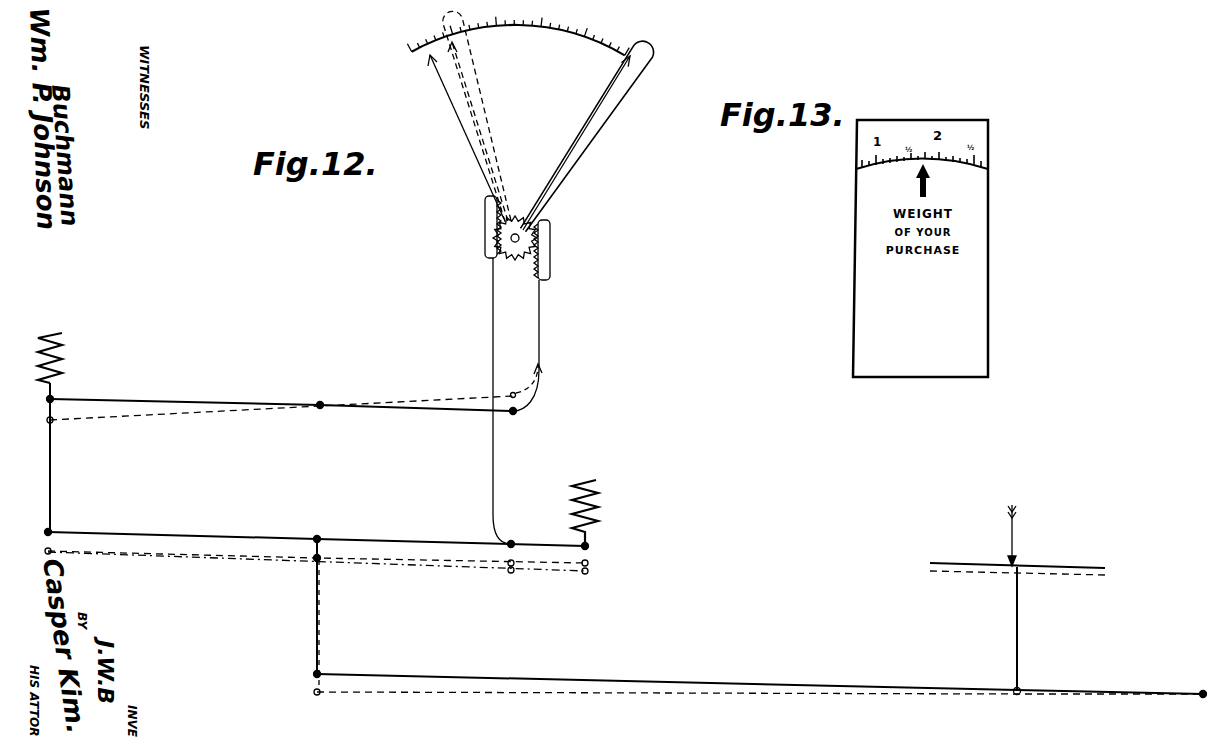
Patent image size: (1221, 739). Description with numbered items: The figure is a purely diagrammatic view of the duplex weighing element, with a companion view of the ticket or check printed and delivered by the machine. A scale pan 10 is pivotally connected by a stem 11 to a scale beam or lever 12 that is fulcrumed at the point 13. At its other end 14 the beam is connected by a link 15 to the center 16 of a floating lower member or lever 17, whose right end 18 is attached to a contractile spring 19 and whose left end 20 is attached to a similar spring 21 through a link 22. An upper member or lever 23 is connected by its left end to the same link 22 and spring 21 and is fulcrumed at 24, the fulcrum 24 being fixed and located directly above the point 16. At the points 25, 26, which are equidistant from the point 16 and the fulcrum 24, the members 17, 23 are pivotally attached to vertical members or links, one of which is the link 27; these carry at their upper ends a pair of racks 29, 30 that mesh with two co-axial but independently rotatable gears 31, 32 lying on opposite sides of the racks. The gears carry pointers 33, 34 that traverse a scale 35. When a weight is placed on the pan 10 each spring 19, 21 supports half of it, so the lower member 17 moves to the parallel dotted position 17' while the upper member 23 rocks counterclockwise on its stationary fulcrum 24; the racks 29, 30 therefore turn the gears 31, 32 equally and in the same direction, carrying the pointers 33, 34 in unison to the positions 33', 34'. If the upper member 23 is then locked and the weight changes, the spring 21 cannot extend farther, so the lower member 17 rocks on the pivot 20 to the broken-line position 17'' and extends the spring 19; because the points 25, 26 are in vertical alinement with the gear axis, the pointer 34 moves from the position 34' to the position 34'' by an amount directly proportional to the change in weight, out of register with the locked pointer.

The scale pan 10 is at (1070, 565).
The stem 11 is at (1020, 633).
The scale beam 12 is at (908, 676).
The fulcrum point 13 is at (1203, 692).
The beam end 14 is at (315, 672).
The link 15 is at (315, 626).
The center of lower member 16 is at (318, 538).
The floating lower member 17 is at (316, 522).
The displaced position of lower member 17' is at (316, 537).
The second displaced position of lower member 17'' is at (316, 581).
The right end of lower member 18 is at (592, 548).
The contractile spring 19 is at (602, 504).
The left end of lower member 20 is at (50, 530).
The spring 21 is at (65, 350).
The link 22 is at (52, 478).
The upper member 23 is at (162, 392).
The fulcrum 24 is at (317, 388).
The pivot point 25 is at (512, 543).
The pivot point 26 is at (515, 413).
The vertical member 27 is at (490, 472).
The rack 29 is at (487, 235).
The rack 30 is at (552, 240).
The gear 31 is at (497, 262).
The gear 32 is at (530, 265).
The pointer 33 is at (587, 136).
The displaced pointer position 33' is at (492, 116).
The pointer 34 is at (576, 143).
The displaced pointer position 34' is at (495, 131).
The second displaced pointer position 34'' is at (454, 137).
The scale 35 is at (538, 32).